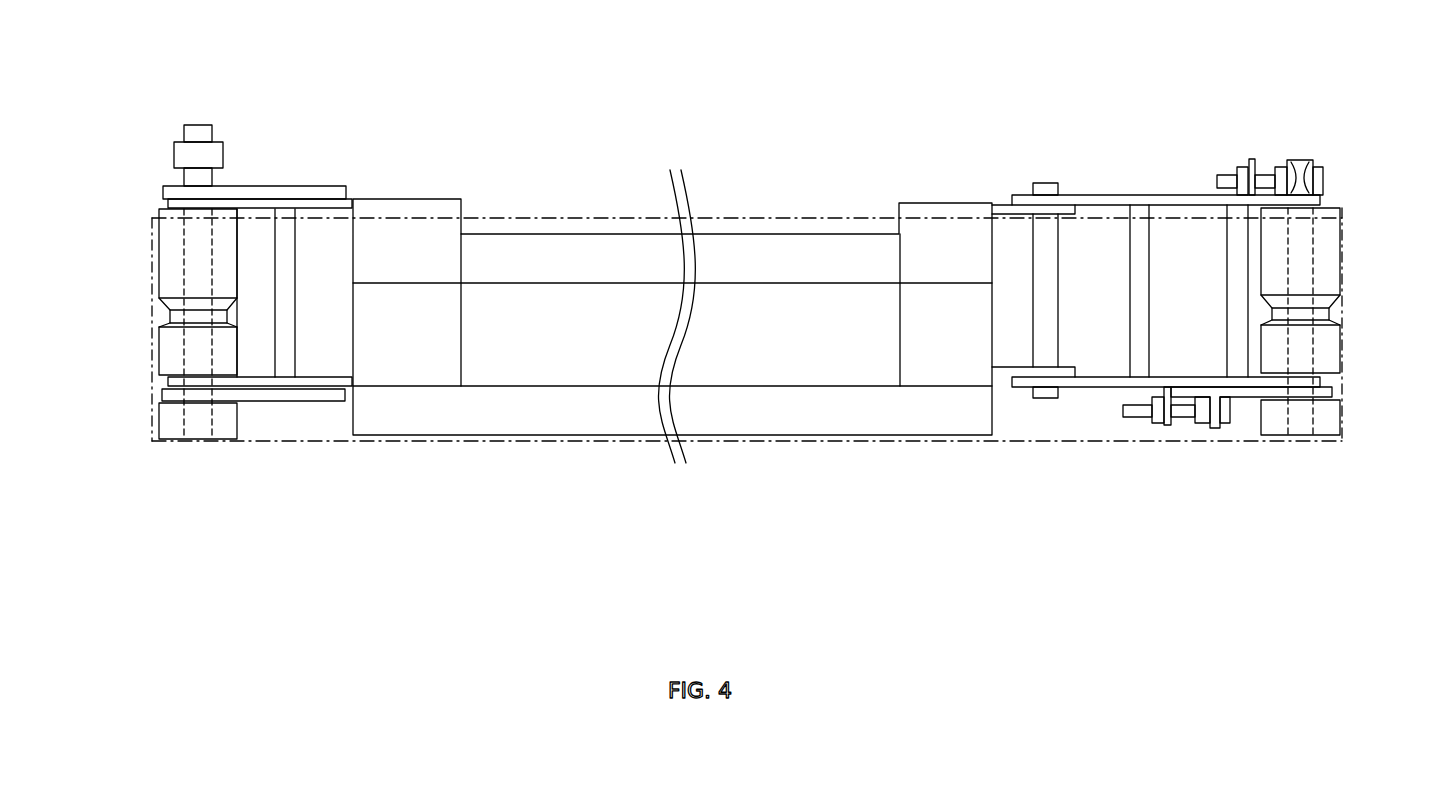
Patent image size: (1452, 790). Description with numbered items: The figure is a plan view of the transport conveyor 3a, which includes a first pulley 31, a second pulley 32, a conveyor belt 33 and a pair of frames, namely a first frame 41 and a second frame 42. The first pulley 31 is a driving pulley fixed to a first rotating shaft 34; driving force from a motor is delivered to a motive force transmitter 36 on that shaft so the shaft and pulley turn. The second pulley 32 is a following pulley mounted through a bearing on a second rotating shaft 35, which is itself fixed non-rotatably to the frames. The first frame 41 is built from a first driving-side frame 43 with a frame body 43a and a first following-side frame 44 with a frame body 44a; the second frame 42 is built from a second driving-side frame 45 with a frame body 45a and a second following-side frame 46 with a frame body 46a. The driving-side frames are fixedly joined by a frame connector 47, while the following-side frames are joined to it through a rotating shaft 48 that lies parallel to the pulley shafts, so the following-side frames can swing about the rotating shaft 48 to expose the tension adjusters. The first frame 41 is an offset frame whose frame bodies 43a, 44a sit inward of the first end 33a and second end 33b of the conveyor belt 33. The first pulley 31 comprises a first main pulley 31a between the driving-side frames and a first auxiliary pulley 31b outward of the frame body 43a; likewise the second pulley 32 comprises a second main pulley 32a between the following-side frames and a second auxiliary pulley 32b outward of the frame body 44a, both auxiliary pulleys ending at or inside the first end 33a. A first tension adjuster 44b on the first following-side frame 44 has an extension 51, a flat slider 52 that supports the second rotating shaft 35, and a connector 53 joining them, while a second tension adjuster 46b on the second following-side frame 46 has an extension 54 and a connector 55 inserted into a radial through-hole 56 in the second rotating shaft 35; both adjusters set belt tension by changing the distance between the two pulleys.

The transport conveyor 3a is at (754, 146).
The first pulley 31 is at (149, 370).
The first main pulley 31a is at (162, 270).
The first auxiliary pulley 31b is at (167, 427).
The second pulley 32 is at (1346, 373).
The second main pulley 32a is at (1335, 265).
The second auxiliary pulley 32b is at (1332, 422).
The conveyor belt 33 is at (810, 217).
The first end 33a is at (1345, 441).
The second end 33b is at (1345, 219).
The first rotating shaft 34 is at (195, 128).
The second rotating shaft 35 is at (1300, 165).
The motive force transmitter 36 is at (172, 155).
The first frame 41 is at (1345, 380).
The second frame 42 is at (1329, 200).
The first driving-side frame 43 is at (295, 391).
The frame body 43a is at (317, 382).
The first following-side frame 44 is at (1209, 439).
The frame body 44a is at (1219, 413).
The first tension adjuster 44b is at (1213, 461).
The second driving-side frame 45 is at (305, 215).
The frame body 45a is at (317, 203).
The second following-side frame 46 is at (1192, 219).
The frame body 46a is at (1130, 203).
The second tension adjuster 46b is at (1286, 128).
The frame connector 47 is at (875, 427).
The rotating shaft 48 is at (1047, 182).
The extension 51 is at (1167, 423).
The slider 52 is at (1238, 400).
The connector 53 is at (1142, 418).
The extension 54 is at (1255, 157).
The connector 55 is at (1228, 170).
The through-hole 56 is at (1310, 175).